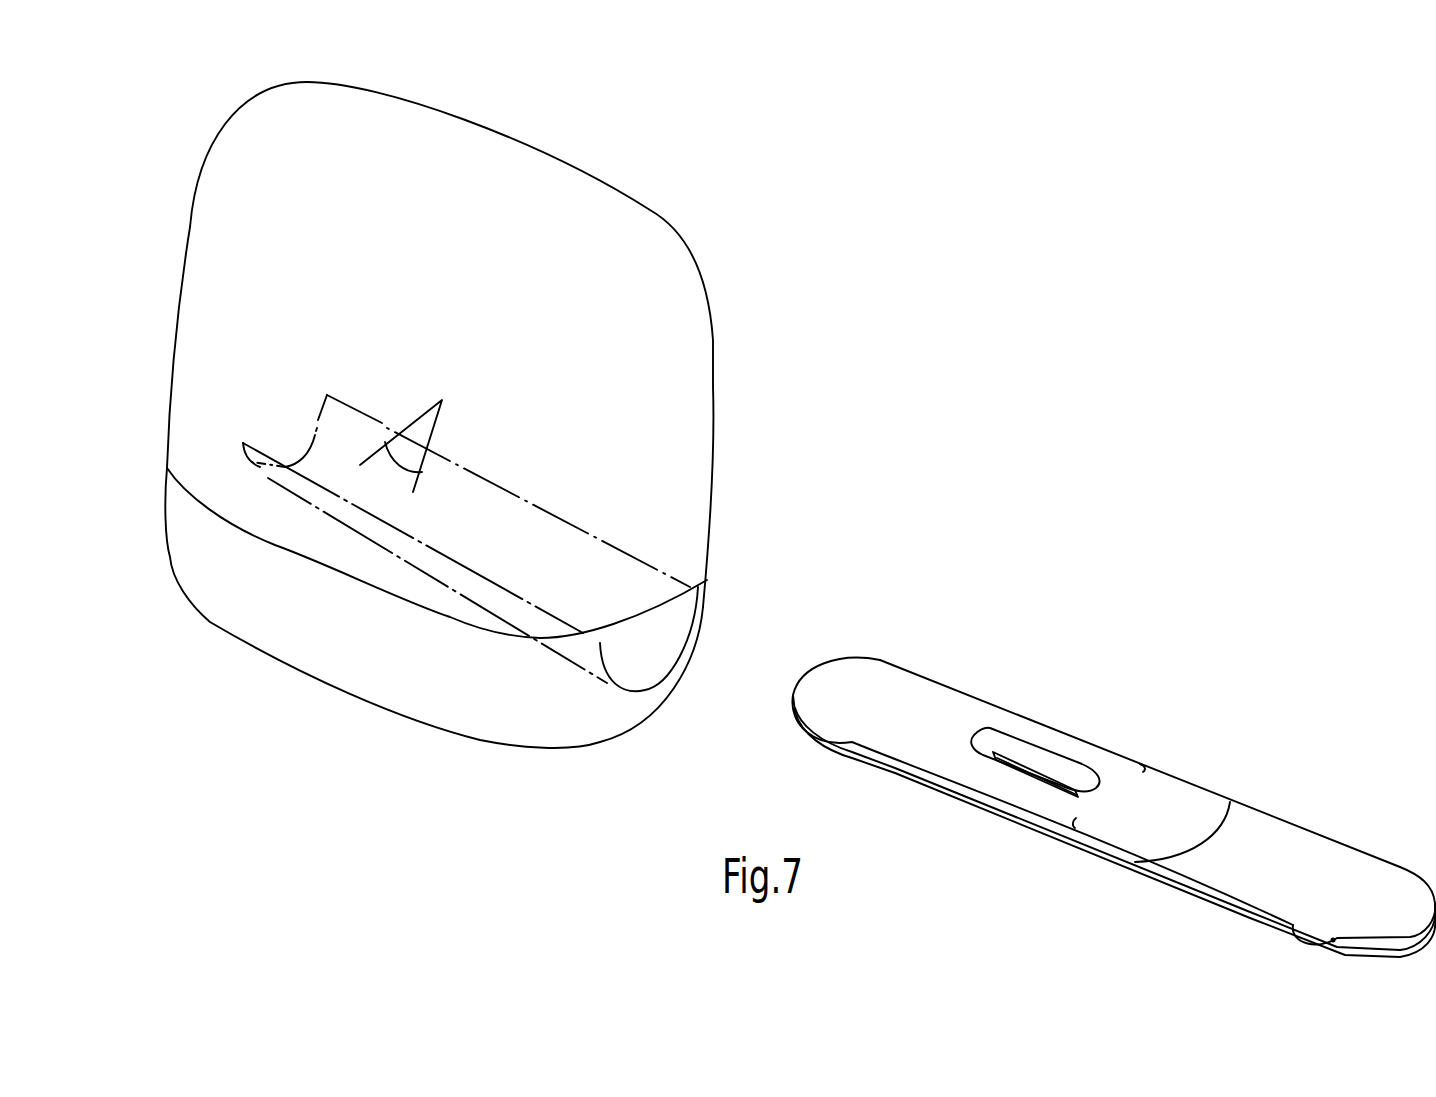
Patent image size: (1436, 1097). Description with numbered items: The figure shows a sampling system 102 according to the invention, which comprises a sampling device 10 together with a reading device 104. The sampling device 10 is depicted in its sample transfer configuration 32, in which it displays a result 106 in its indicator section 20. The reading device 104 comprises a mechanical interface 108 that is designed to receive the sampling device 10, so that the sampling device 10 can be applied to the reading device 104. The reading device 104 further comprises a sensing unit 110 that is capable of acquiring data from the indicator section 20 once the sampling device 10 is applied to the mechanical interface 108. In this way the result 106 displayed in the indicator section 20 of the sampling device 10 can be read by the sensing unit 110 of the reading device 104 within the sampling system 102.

The sampling device 10 is at (1113, 798).
The sample transfer configuration 32 is at (1206, 728).
The indicator section 20 is at (1114, 631).
The result 106 is at (1040, 748).
The sampling system 102 is at (742, 152).
The reading device 104 is at (260, 76).
The mechanical interface 108 is at (639, 668).
The sensing unit 110 is at (458, 432).